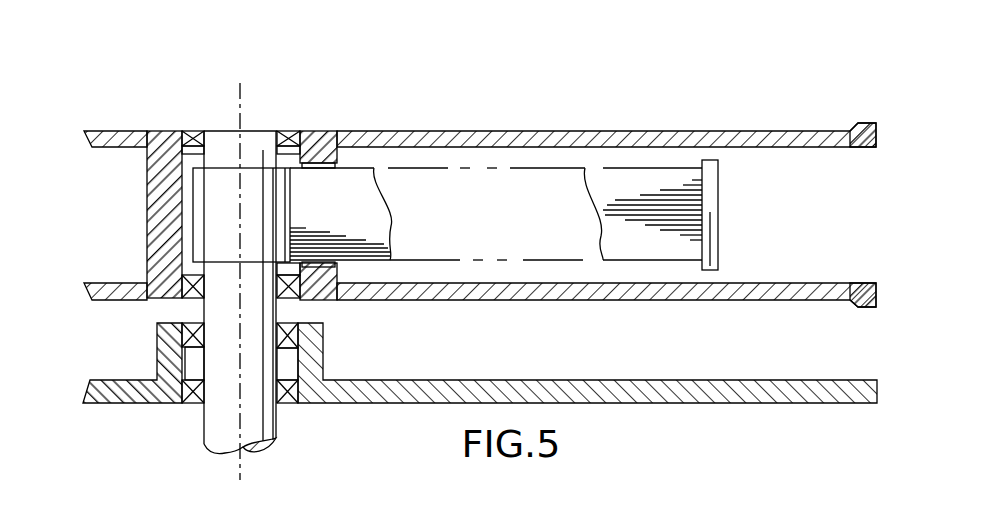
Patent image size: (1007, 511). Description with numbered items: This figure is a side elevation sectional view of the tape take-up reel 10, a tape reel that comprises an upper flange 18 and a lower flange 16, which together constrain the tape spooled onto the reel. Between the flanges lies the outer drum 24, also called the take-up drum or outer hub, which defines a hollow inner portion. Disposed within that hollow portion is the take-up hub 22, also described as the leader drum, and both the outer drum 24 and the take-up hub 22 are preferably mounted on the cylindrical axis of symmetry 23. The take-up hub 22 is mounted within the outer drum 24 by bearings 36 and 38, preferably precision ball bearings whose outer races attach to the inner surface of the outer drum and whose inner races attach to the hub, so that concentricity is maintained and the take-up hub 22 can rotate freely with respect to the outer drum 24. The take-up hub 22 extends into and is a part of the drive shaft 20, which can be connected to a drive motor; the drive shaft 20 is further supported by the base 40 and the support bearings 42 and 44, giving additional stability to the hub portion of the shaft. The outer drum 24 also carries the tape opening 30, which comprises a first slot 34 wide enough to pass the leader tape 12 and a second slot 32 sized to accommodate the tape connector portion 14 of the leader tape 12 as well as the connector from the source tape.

The tape reel 10 is at (469, 263).
The leader tape 12 is at (604, 190).
The tape connector portion 14 is at (718, 186).
The lower flange 16 is at (740, 302).
The upper flange 18 is at (493, 130).
The drive shaft 20 is at (223, 427).
The take-up hub 22 is at (257, 130).
The cylindrical axis of symmetry 23 is at (240, 102).
The outer drum 24 is at (147, 213).
The tape opening 30 is at (362, 272).
The second slot 32 is at (337, 164).
The first slot 34 is at (308, 131).
The bearing 36 is at (195, 130).
The bearing 38 is at (198, 303).
The base 40 is at (592, 378).
The support bearing 42 is at (293, 406).
The support bearing 44 is at (284, 321).